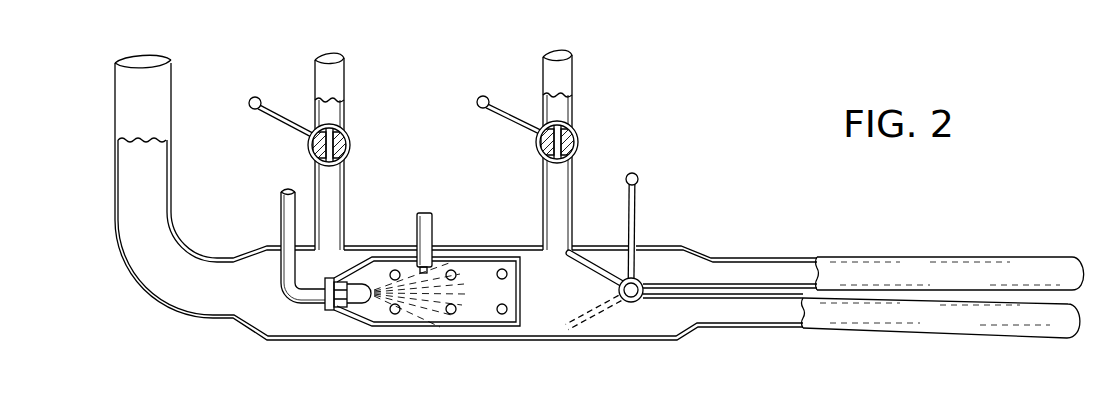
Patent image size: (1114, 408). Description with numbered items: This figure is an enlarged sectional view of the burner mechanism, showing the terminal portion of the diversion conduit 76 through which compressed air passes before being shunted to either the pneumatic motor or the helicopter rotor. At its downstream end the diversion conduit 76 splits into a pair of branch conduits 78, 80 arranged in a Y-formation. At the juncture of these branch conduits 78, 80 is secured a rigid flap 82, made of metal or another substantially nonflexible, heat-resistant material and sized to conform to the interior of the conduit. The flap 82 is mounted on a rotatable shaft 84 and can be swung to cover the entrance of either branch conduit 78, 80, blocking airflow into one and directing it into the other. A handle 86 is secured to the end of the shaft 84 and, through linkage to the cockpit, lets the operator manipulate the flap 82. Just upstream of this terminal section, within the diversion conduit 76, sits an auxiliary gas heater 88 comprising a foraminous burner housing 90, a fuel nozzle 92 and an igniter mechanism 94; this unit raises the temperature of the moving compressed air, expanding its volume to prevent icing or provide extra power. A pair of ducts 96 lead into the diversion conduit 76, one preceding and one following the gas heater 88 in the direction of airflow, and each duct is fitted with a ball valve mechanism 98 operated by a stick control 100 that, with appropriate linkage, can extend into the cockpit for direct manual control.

The diversion conduit 76 is at (132, 222).
The branch conduit 78 is at (748, 317).
The branch conduit 80 is at (744, 270).
The rigid flap 82 is at (591, 264).
The rotatable shaft 84 is at (638, 303).
The handle 86 is at (637, 209).
The auxiliary gas heater 88 is at (403, 314).
The foraminous burner housing 90 is at (493, 328).
The fuel nozzle 92 is at (363, 304).
The igniter mechanism 94 is at (434, 219).
The ducts 96 is at (333, 84).
The ball valve mechanism 98 is at (351, 149).
The stick control 100 is at (280, 120).